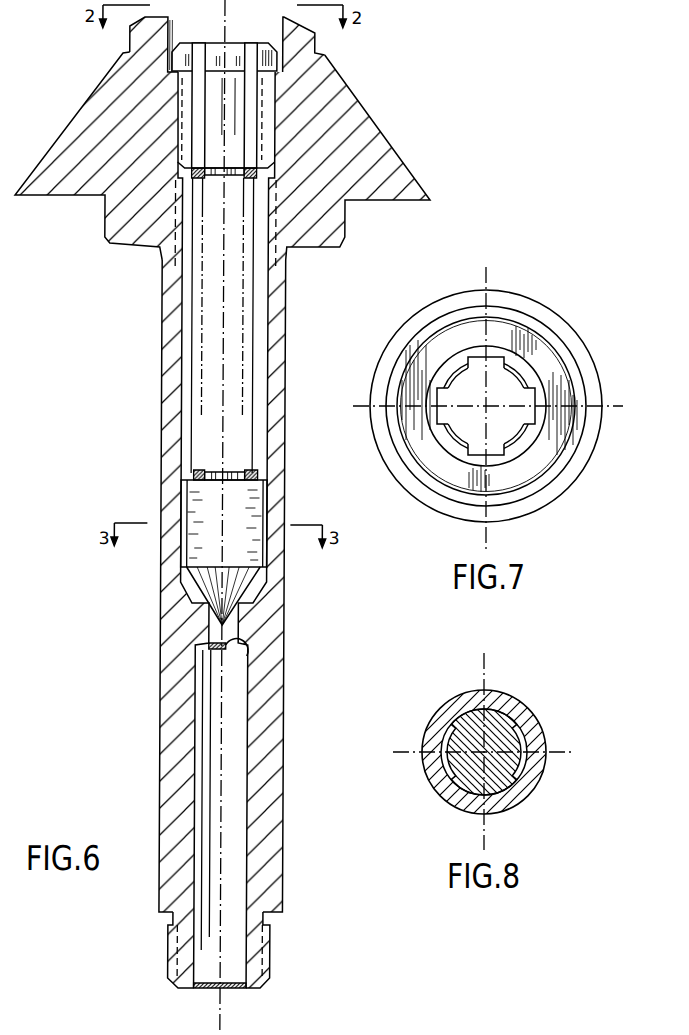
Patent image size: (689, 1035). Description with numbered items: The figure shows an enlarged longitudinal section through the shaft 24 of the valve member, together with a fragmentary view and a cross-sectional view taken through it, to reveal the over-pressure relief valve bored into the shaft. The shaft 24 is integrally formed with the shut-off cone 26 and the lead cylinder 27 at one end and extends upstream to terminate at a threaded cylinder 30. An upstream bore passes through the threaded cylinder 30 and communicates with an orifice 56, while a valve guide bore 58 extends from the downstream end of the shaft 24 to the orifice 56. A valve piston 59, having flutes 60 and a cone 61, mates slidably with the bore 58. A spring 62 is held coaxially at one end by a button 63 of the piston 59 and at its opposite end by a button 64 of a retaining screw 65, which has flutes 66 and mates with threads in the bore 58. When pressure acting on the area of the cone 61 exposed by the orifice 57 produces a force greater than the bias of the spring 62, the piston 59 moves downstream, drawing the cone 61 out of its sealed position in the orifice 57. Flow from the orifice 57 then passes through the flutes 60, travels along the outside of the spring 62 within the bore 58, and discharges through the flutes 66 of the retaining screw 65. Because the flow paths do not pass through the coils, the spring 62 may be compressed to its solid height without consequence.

In FIG. 6, the shaft 24 is at (291, 765).
In FIG. 8, the shaft 24 is at (508, 695).
In FIG. 6, the shut-off cone 26 is at (405, 166).
In FIG. 7, the shut-off cone 26 is at (579, 475).
In FIG. 6, the lead cylinder 27 is at (317, 45).
In FIG. 7, the lead cylinder 27 is at (580, 443).
In FIG. 6, the threaded cylinder 30 is at (277, 947).
In FIG. 6, the orifice 56 is at (241, 984).
In FIG. 6, the orifice 57 is at (252, 660).
In FIG. 6, the valve guide bore 58 is at (262, 443).
In FIG. 6, the valve piston 59 is at (275, 559).
In FIG. 8, the valve piston 59 is at (537, 748).
In FIG. 6, the flutes 60 is at (200, 555).
In FIG. 8, the flutes 60 is at (518, 720).
In FIG. 6, the cone 61 is at (255, 602).
In FIG. 6, the spring 62 is at (256, 479).
In FIG. 6, the button 63 is at (211, 472).
In FIG. 6, the button 64 is at (241, 181).
In FIG. 6, the retaining screw 65 is at (280, 128).
In FIG. 7, the retaining screw 65 is at (540, 402).
In FIG. 6, the flutes 66 is at (257, 155).
In FIG. 7, the flutes 66 is at (517, 375).